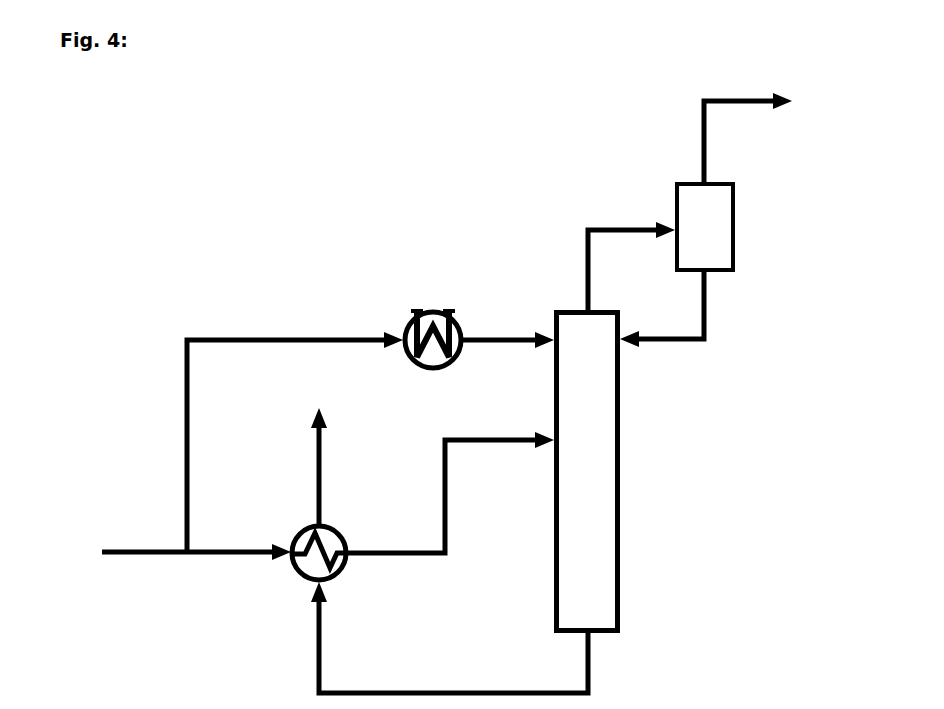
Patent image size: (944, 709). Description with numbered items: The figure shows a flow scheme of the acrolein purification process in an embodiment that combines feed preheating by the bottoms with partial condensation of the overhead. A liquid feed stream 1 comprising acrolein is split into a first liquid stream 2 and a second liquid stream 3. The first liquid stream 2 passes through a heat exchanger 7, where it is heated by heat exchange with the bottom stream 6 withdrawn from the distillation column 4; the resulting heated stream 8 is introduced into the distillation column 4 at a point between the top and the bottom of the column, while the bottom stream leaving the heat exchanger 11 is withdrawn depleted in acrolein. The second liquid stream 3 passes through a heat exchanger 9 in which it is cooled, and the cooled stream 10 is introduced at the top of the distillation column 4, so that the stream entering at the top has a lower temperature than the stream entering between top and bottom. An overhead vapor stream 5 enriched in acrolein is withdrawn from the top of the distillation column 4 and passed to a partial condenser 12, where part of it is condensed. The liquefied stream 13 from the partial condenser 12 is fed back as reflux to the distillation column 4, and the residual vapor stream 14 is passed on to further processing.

The liquid feed stream 1 is at (144, 530).
The first liquid stream 2 is at (239, 534).
The second liquid stream 3 is at (277, 442).
The distillation column 4 is at (609, 472).
The overhead vapor stream 5 is at (631, 248).
The bottom stream 6 is at (449, 637).
The heat exchanger 7 is at (325, 537).
The heated stream 8 is at (450, 474).
The heat exchanger 9 is at (433, 312).
The cooled stream 10 is at (507, 320).
The bottom stream from heat exchanger 11 is at (303, 467).
The partial condenser 12 is at (733, 227).
The liquefied stream 13 is at (662, 331).
The residual vapor stream 14 is at (773, 135).